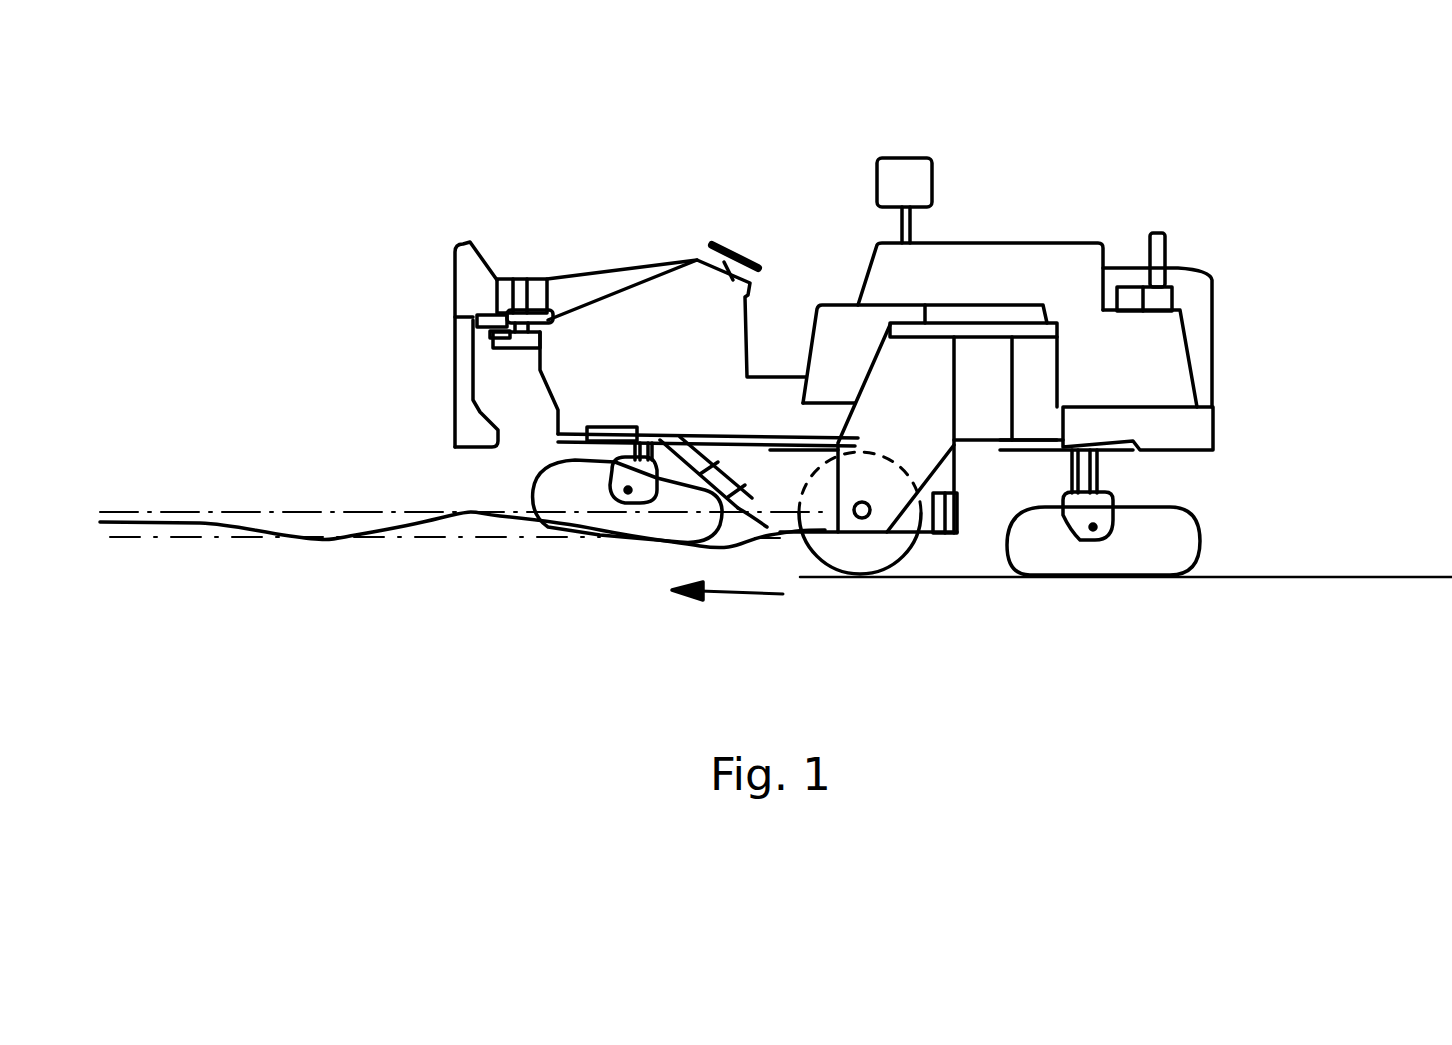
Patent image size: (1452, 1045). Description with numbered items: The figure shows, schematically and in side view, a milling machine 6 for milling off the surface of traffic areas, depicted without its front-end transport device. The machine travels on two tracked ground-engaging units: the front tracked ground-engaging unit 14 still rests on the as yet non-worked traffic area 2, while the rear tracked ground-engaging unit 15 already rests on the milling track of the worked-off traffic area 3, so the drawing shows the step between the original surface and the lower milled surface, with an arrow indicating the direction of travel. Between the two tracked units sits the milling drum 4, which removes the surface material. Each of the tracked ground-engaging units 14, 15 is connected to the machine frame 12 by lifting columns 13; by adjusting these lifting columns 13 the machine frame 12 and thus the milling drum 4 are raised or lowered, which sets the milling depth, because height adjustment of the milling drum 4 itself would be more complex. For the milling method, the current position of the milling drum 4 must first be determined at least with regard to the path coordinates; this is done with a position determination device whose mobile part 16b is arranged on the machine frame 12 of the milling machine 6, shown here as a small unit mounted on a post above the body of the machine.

The non-worked traffic area 2 is at (200, 525).
The worked-off traffic area 3 is at (1262, 578).
The milling drum 4 is at (912, 550).
The milling machine 6 is at (899, 380).
The machine frame 12 is at (1200, 433).
The lifting columns 13 is at (1097, 490).
The front tracked ground-engaging unit 14 is at (563, 490).
The rear tracked ground-engaging unit 15 is at (1150, 550).
The mobile part of the position determination device 16b is at (918, 174).